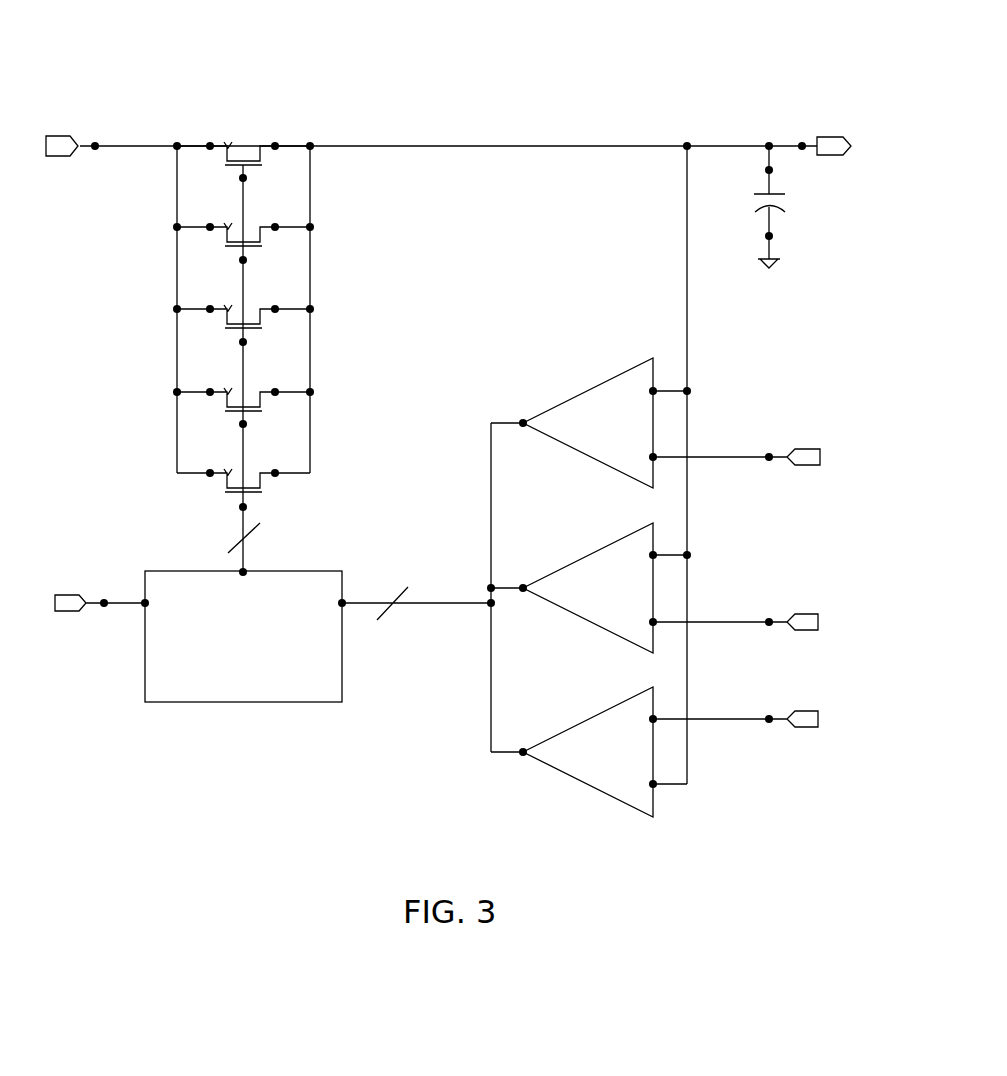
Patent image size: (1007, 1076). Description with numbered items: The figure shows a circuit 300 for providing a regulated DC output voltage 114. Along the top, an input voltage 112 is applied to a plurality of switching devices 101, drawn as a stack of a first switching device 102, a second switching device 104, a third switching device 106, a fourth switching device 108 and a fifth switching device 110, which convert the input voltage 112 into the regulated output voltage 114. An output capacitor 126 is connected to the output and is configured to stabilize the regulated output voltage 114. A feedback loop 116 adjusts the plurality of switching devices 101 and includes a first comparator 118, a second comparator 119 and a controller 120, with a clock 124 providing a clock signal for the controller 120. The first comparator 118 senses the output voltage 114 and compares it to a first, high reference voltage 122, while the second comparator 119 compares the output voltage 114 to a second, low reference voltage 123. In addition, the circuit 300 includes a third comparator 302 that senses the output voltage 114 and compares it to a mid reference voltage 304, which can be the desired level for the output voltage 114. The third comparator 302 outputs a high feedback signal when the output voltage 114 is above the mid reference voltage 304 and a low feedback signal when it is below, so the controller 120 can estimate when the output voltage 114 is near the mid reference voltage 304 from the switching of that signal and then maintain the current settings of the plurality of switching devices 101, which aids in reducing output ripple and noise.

The circuit 300 is at (644, 61).
The plurality of switching devices 101 is at (388, 336).
The first switching device 102 is at (253, 160).
The second switching device 104 is at (250, 242).
The third switching device 106 is at (252, 325).
The fourth switching device 108 is at (250, 407).
The fifth switching device 110 is at (252, 488).
The input voltage 112 is at (62, 135).
The regulated output voltage 114 is at (835, 134).
The feedback loop 116 is at (593, 834).
The first comparator 118 is at (618, 373).
The second comparator 119 is at (617, 703).
The controller 120 is at (335, 571).
The first reference voltage 122 is at (809, 450).
The second reference voltage 123 is at (808, 712).
The clock 124 is at (63, 596).
The output capacitor 126 is at (785, 200).
The third comparator 302 is at (617, 537).
The mid reference voltage 304 is at (809, 614).